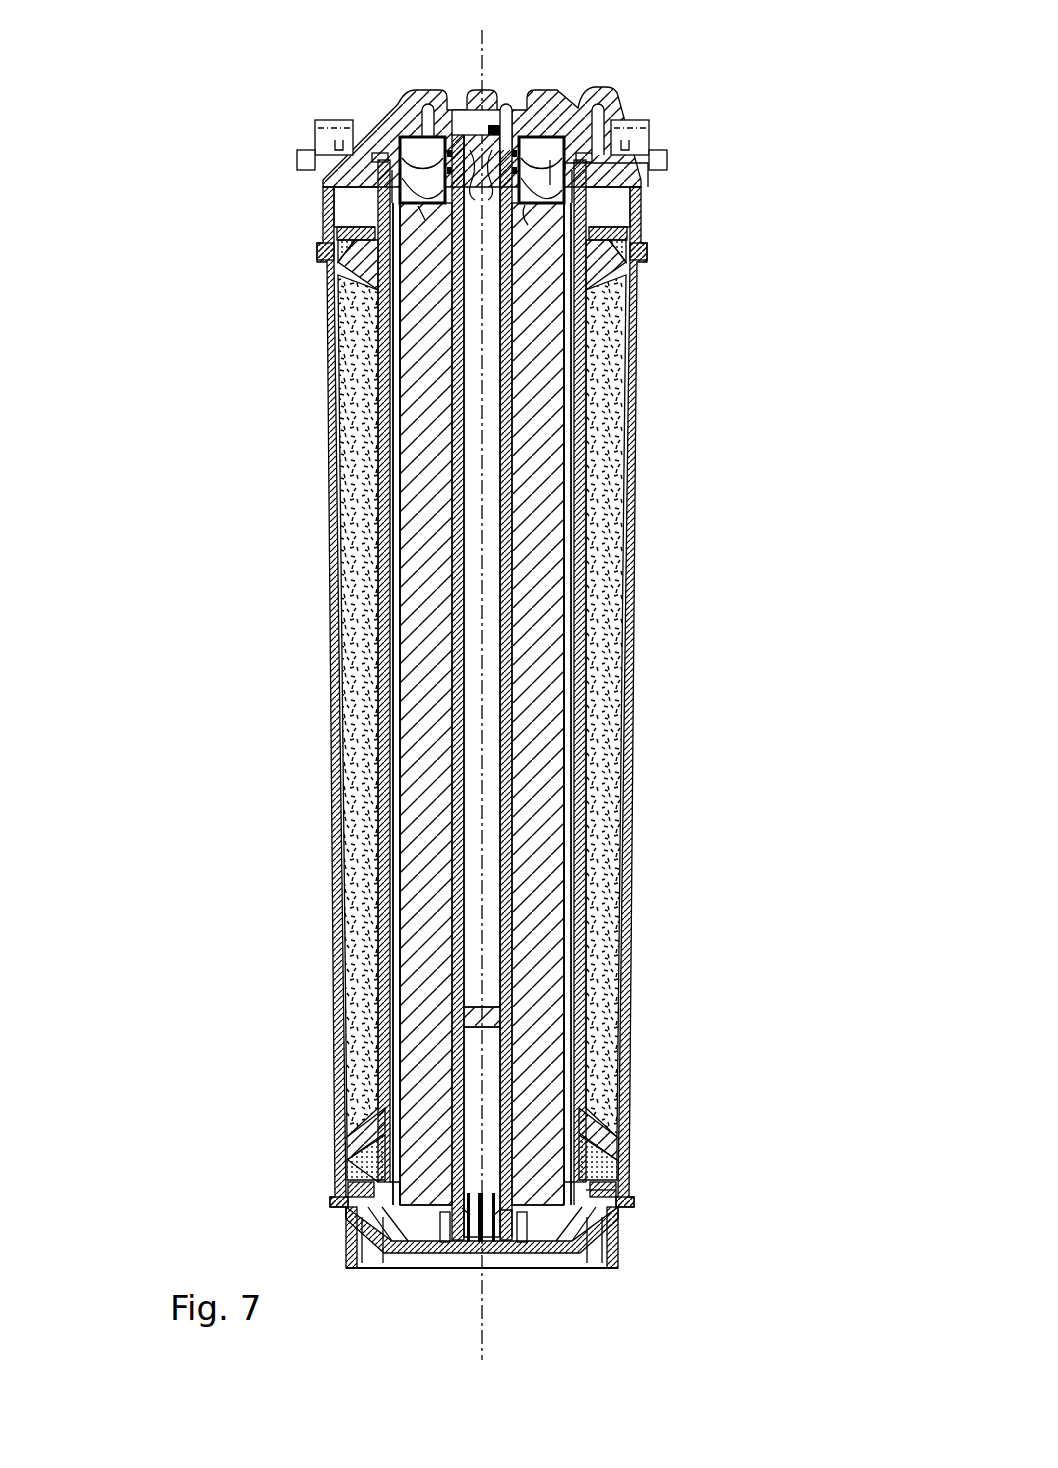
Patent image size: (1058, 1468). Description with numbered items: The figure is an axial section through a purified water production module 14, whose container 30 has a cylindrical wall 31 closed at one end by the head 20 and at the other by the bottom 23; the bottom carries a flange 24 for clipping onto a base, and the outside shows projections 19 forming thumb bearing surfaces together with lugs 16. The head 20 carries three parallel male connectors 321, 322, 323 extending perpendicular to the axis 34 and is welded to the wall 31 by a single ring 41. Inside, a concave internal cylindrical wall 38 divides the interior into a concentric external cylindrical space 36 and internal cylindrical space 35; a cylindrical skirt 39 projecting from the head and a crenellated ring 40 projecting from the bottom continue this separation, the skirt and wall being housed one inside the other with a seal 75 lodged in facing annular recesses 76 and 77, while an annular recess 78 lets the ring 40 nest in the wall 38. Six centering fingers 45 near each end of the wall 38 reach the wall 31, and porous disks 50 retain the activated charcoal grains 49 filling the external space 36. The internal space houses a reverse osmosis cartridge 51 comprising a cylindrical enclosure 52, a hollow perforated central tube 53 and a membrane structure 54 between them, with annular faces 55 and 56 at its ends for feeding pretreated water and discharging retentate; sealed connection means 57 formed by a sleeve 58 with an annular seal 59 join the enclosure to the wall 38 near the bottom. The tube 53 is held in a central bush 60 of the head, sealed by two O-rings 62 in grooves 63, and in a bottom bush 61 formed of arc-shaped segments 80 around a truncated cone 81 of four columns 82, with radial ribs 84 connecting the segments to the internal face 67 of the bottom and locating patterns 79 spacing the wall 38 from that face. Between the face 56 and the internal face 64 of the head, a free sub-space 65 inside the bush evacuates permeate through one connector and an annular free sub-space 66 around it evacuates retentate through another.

The purified water production module 14 is at (690, 520).
The locking lugs 16 is at (300, 160).
The projections 19 is at (315, 127).
The head 20 is at (390, 80).
The bottom 23 is at (640, 1263).
The flange 24 is at (625, 1230).
The container 30 is at (315, 583).
The cylindrical wall 31 is at (330, 500).
The male connector 321 is at (600, 104).
The male connector 322 is at (505, 103).
The male connector 323 is at (416, 102).
The axis 34 is at (478, 347).
The internal cylindrical space 35 is at (400, 1255).
The external cylindrical space 36 is at (348, 412).
The internal cylindrical wall 38 is at (380, 760).
The cylindrical skirt 39 is at (640, 237).
The crenellated ring 40 is at (350, 1225).
The ring 41 is at (323, 186).
The centering fingers 45 is at (345, 268).
The activated charcoal grains 49 is at (608, 457).
The porous disk 50 is at (322, 250).
The reverse osmosis cartridge 51 is at (588, 1010).
The cylindrical enclosure 52 is at (574, 712).
The central tube 53 is at (518, 383).
The reverse osmosis treatment membrane structure 54 is at (586, 657).
The annular face 55 is at (602, 1245).
The annular face 56 is at (553, 183).
The sealed connection means 57 is at (360, 1118).
The sleeve 58 is at (368, 1162).
The annular seal 59 is at (348, 1112).
The central bush 60 is at (398, 145).
The central bush 61 is at (432, 1248).
The O-rings 62 is at (491, 192).
The grooves 63 is at (556, 236).
The internal face 64 is at (422, 140).
The free sub-space 65 is at (471, 115).
The annular free sub-space 66 is at (540, 145).
The internal face 67 is at (532, 1210).
The seal 75 is at (641, 211).
The annular recess 76 is at (430, 227).
The annular recess 77 is at (635, 163).
The annular recess 78 is at (405, 1170).
The locating patterns 79 is at (608, 1190).
The circular arc-shaped segments 80 is at (445, 1212).
The central truncated cone 81 is at (472, 1180).
The columns 82 is at (484, 1252).
The radial ribs 84 is at (545, 1250).